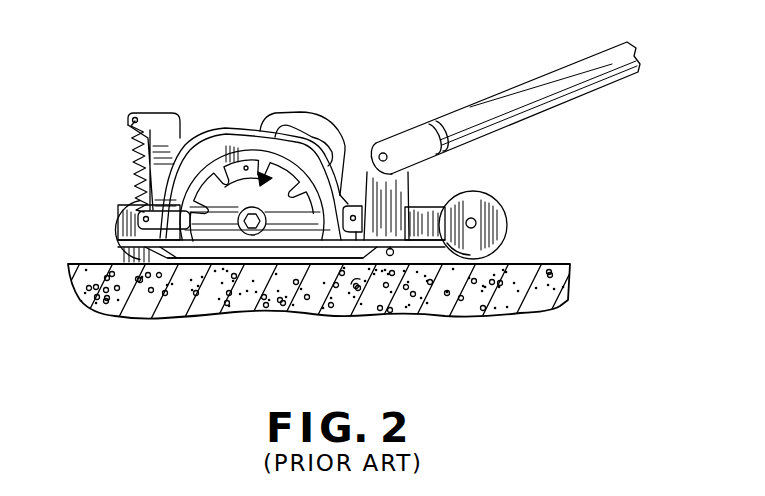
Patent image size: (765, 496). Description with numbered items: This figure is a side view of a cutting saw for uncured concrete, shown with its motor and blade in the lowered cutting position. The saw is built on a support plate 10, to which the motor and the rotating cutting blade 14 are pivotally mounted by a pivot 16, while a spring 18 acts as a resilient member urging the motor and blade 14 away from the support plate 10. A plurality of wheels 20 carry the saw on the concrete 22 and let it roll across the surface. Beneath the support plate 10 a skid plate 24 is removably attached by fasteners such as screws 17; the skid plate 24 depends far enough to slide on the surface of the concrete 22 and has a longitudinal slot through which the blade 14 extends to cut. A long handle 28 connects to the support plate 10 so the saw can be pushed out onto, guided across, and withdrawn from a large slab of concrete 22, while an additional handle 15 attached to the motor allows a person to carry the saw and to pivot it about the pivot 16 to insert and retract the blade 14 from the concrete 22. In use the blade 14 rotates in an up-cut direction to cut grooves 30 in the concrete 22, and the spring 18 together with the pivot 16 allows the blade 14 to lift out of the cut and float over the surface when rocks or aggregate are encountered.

The support plate 10 is at (108, 243).
The cutting blade 14 is at (217, 130).
The handle 15 is at (318, 114).
The pivot 16 is at (362, 187).
The screws 17 is at (390, 256).
The spring 18 is at (133, 158).
The wheels 20 is at (110, 212).
The concrete 22 is at (568, 263).
The skid plate 24 is at (176, 266).
The handle 28 is at (573, 87).
The grooves 30 is at (351, 284).